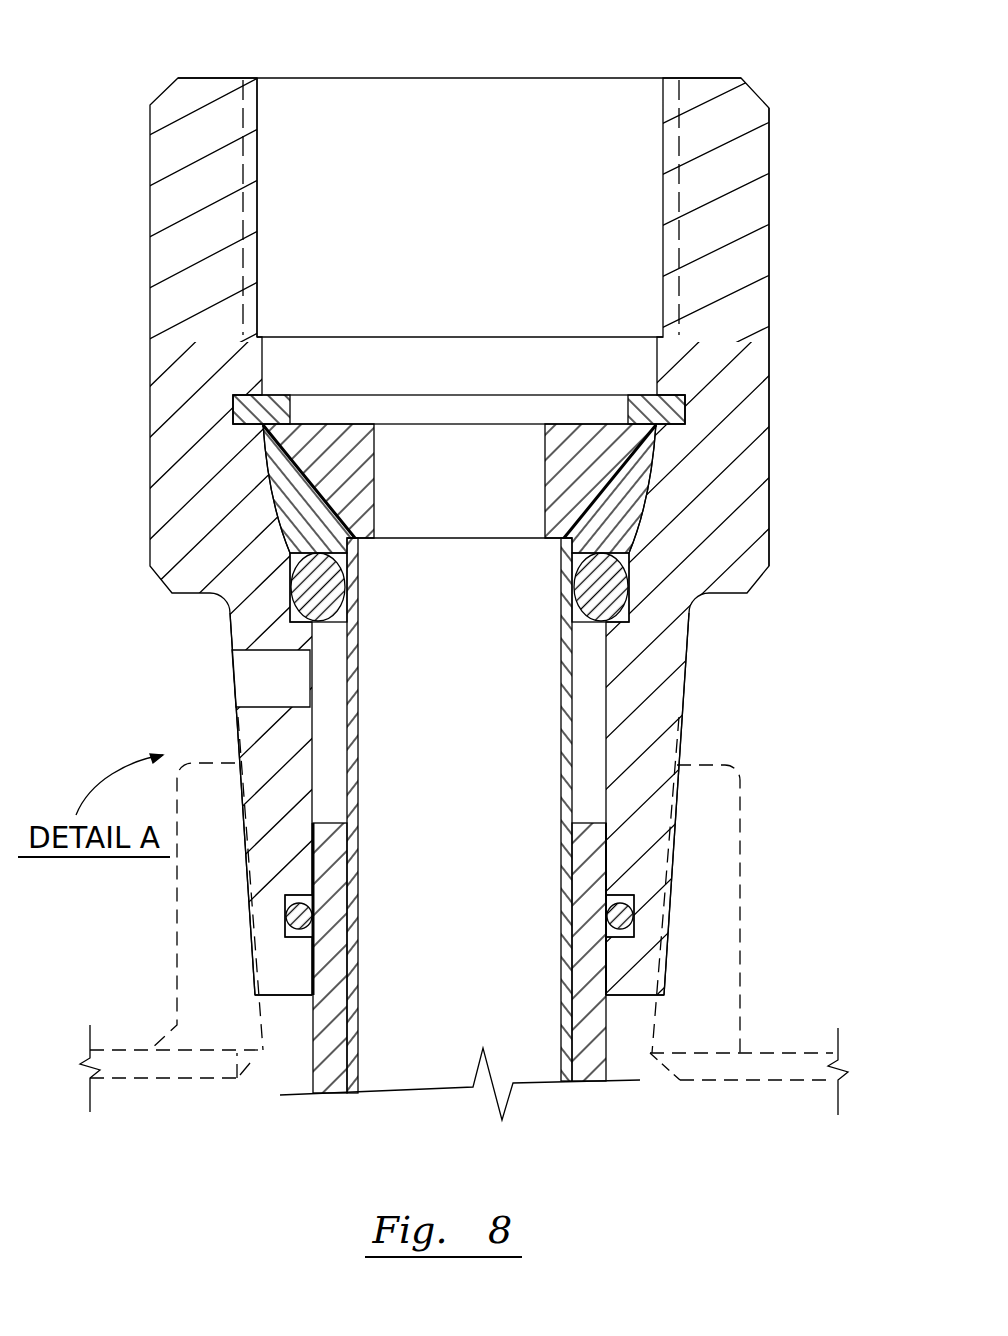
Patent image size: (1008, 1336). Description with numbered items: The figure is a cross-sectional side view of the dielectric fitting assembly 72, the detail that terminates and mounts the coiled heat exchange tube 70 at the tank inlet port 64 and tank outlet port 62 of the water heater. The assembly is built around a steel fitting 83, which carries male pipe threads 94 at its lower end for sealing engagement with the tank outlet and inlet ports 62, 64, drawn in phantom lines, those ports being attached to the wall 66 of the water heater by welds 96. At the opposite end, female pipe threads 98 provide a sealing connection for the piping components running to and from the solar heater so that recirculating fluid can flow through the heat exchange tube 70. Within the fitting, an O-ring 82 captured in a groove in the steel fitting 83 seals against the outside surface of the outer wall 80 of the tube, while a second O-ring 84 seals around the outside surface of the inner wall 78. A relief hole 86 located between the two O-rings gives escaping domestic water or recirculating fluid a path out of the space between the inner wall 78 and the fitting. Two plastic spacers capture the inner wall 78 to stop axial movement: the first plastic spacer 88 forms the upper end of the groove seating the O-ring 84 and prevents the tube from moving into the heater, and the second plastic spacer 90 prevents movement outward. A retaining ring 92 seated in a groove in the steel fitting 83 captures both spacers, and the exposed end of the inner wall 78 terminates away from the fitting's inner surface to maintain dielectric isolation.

The dielectric fitting assembly 72 is at (797, 220).
The female pipe threads 98 is at (258, 153).
The steel fitting 83 is at (769, 342).
The retaining ring 92 is at (233, 405).
The second plastic spacer 90 is at (657, 433).
The first plastic spacer 88 is at (285, 507).
The second O-ring 84 is at (630, 568).
The relief hole 86 is at (263, 650).
The male pipe threads 94 is at (673, 822).
The inner wall 78 is at (355, 1050).
The outer wall 80 is at (327, 1083).
The O-ring 82 is at (290, 920).
The heat exchange tube 70 is at (310, 1067).
The tank outlet port 62 is at (740, 887).
The tank inlet port 64 is at (176, 906).
The welds 96 is at (677, 1057).
The wall 66 is at (783, 1052).